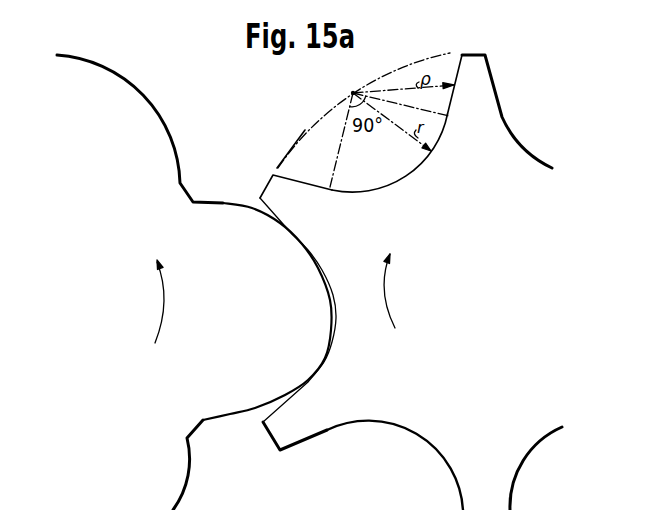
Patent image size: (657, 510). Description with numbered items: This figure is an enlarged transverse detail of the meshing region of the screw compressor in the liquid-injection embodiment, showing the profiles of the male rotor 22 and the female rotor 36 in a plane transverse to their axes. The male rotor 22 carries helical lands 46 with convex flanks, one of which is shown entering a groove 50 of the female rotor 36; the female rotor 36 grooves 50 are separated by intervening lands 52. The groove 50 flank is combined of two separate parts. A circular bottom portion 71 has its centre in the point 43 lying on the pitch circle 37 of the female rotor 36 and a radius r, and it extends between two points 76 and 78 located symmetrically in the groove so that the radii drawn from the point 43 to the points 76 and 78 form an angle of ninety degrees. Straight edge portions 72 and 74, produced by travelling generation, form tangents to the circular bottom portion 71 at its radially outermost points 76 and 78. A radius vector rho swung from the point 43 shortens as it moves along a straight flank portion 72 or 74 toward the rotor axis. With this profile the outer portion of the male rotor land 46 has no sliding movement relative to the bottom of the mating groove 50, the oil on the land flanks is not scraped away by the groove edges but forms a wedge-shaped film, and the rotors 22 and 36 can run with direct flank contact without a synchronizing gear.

The male rotor 22 is at (121, 84).
The female rotor 36 is at (418, 400).
The pitch circle 37 is at (331, 109).
The point of intersection with the pitch circle 43 is at (358, 66).
The helical land 46 is at (229, 215).
The helical groove 50 is at (379, 173).
The land 52 is at (319, 403).
The circular bottom portion 71 is at (432, 160).
The straight edge portion 72 is at (459, 64).
The straight edge portion 74 is at (296, 178).
The radially outermost point 76 is at (448, 114).
The radially outermost point 78 is at (334, 191).